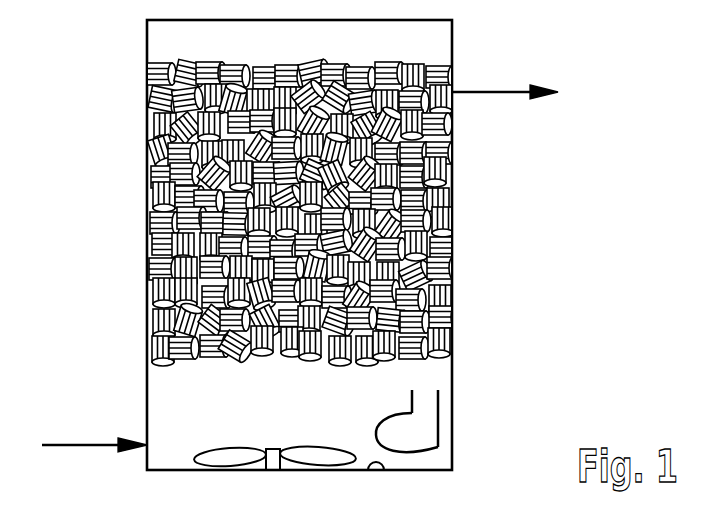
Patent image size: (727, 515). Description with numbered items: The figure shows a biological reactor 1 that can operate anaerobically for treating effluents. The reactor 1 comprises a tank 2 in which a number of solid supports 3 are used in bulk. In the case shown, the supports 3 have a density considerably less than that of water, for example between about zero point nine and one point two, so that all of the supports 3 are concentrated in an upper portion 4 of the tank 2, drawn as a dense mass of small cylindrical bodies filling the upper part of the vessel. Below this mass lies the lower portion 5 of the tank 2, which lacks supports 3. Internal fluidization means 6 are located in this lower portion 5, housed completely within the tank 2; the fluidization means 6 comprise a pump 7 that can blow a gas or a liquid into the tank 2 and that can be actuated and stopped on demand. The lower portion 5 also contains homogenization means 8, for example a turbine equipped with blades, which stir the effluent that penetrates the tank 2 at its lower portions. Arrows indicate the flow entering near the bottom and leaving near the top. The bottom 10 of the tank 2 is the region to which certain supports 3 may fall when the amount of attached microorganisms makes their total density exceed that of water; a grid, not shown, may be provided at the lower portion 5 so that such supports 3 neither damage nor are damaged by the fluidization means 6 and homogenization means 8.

The biological reactor 1 is at (124, 398).
The tank 2 is at (147, 191).
The solid supports 3 is at (452, 147).
The upper portion 4 is at (130, 106).
The lower portion 5 is at (466, 396).
The internal fluidization means 6 is at (440, 450).
The pump 7 is at (420, 428).
The homogenization means 8 is at (207, 455).
The bottom 10 is at (382, 466).